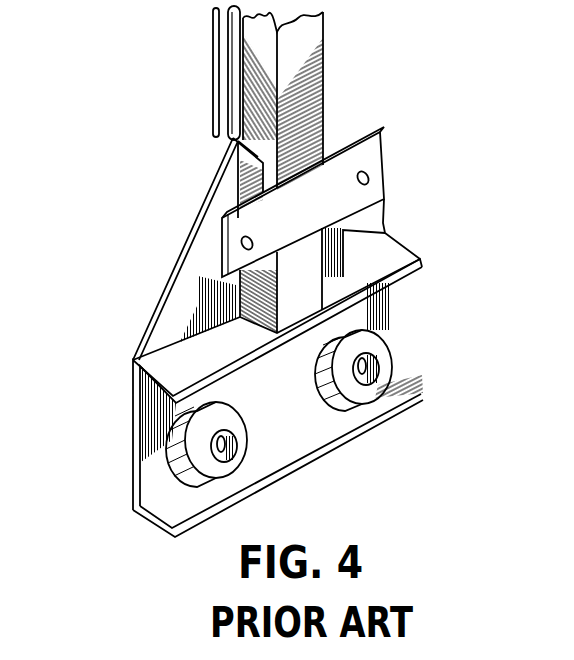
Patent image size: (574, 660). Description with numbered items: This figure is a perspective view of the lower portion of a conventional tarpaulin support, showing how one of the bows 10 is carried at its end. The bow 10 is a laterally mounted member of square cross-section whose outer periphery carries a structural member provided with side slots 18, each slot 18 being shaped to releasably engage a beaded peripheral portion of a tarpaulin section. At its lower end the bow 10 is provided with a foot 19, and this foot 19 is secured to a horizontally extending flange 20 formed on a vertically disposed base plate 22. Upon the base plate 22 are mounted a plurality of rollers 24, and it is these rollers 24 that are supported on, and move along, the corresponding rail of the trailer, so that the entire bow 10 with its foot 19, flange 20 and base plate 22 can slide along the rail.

The bow 10 is at (327, 85).
The side slot 18 is at (227, 52).
The foot 19 is at (305, 313).
The horizontally extending flange 20 is at (145, 416).
The base plate 22 is at (157, 467).
The roller 24 is at (240, 433).